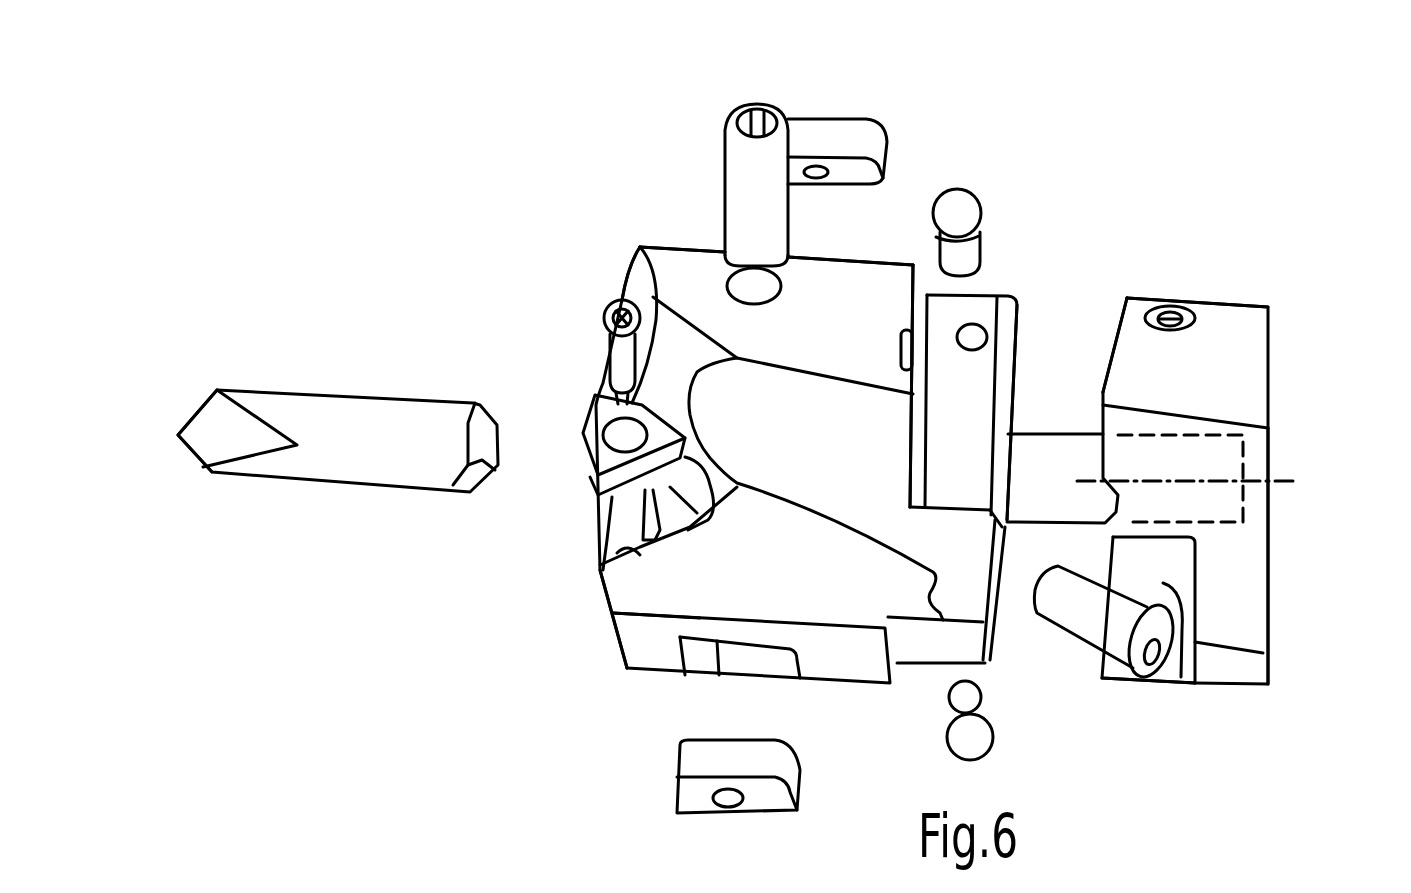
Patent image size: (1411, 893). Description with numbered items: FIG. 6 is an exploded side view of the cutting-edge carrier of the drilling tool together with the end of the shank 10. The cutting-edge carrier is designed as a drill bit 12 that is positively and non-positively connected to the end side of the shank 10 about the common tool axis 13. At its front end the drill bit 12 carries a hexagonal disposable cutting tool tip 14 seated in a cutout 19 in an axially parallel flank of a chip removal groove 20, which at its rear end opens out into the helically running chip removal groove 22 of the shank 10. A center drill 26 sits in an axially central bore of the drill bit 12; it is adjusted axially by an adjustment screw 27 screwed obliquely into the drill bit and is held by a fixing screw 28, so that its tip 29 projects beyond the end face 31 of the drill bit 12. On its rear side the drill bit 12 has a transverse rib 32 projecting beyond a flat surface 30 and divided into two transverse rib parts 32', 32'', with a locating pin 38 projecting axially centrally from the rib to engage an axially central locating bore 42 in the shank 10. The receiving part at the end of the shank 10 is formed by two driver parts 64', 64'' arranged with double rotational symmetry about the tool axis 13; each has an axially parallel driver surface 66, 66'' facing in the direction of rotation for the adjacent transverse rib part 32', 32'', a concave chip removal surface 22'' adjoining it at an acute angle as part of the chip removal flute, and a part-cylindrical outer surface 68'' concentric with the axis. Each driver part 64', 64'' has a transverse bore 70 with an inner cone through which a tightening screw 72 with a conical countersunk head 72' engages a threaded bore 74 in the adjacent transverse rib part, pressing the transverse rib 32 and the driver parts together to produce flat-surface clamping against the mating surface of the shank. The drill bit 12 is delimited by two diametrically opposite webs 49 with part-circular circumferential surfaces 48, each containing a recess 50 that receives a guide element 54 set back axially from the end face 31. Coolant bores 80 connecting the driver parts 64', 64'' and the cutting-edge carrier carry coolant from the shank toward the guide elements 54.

The shank 10 is at (1243, 353).
The drill bit 12 is at (707, 275).
The tool axis 13 is at (1280, 482).
The disposable cutting tool tip 14 is at (597, 462).
The cutout 19 is at (620, 537).
The chip removal groove 20 is at (852, 488).
The chip removal groove 22 is at (1260, 599).
The concave chip removal surface 22'' is at (1240, 447).
The center drill 26 is at (340, 383).
The adjustment screw 27 is at (1102, 630).
The fixing screw 28 is at (740, 187).
The tip 29 is at (195, 465).
The flat surface 30 is at (922, 264).
The end face 31 is at (585, 550).
The transverse rib 32 is at (1038, 376).
The transverse rib part 32' is at (979, 374).
The transverse rib part 32'' is at (927, 687).
The locating pin 38 is at (1045, 460).
The locating bore 42 is at (1103, 440).
The circumferential surface 48 is at (845, 290).
The web 49 is at (670, 265).
The recess 50 is at (703, 660).
The guide element 54 is at (829, 143).
The driver part 64' is at (1138, 301).
The driver part 64'' is at (1148, 718).
The driver surface 66 is at (1161, 646).
The driver surface 66'' is at (1256, 603).
The part-cylindrical outer surface 68'' is at (1208, 275).
The transverse bore 70 is at (1178, 315).
The tightening screw 72 is at (992, 441).
The conical countersunk head 72' is at (1003, 444).
The threaded bore 74 is at (972, 350).
The bore 80 is at (907, 362).